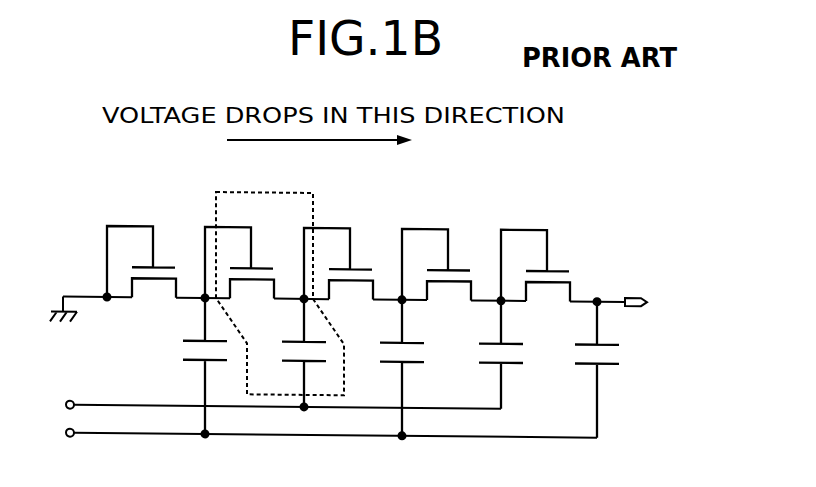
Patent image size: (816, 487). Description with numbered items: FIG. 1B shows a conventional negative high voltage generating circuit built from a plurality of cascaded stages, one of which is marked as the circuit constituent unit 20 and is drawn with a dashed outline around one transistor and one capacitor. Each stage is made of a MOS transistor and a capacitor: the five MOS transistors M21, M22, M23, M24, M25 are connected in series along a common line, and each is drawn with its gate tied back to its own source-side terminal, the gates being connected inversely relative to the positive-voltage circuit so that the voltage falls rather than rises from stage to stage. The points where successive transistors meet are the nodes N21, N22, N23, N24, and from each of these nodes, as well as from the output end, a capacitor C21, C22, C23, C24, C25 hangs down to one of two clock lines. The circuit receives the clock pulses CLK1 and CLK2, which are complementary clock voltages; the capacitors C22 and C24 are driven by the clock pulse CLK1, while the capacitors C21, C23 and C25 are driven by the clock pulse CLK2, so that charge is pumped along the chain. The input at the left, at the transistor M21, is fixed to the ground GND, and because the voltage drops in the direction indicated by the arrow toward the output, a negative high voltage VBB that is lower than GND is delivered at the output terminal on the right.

The circuit constituent unit 20 is at (274, 285).
The transistor M21 is at (141, 250).
The transistor M22 is at (244, 251).
The transistor M23 is at (342, 251).
The transistor M24 is at (437, 252).
The transistor M25 is at (535, 253).
The capacitor C21 is at (189, 365).
The capacitor C22 is at (289, 352).
The capacitor C23 is at (389, 367).
The capacitor C24 is at (487, 354).
The capacitor C25 is at (582, 369).
The node N21 is at (182, 312).
The node N22 is at (281, 313).
The node N23 is at (379, 313).
The node N24 is at (479, 314).
The clock pulse CLK1 is at (283, 392).
The clock pulse CLK2 is at (331, 450).
The ground GND is at (57, 325).
The negative high voltage VBB is at (662, 305).